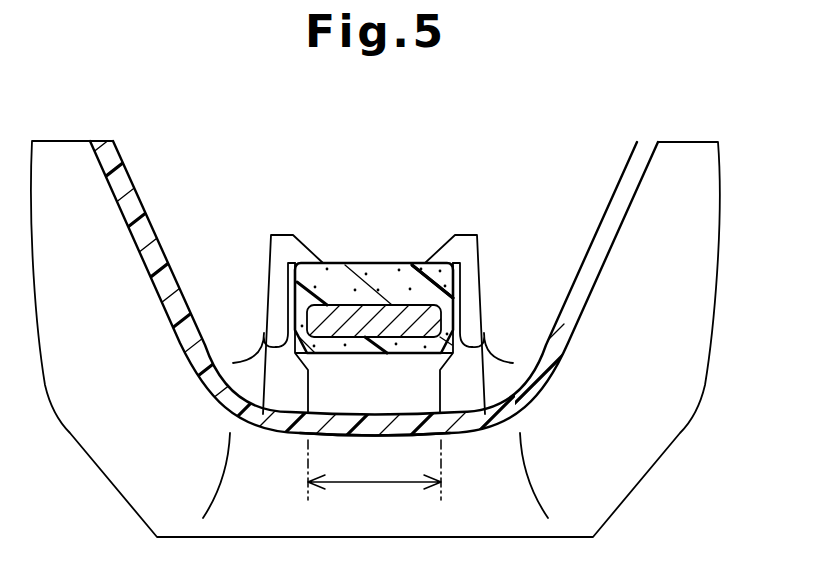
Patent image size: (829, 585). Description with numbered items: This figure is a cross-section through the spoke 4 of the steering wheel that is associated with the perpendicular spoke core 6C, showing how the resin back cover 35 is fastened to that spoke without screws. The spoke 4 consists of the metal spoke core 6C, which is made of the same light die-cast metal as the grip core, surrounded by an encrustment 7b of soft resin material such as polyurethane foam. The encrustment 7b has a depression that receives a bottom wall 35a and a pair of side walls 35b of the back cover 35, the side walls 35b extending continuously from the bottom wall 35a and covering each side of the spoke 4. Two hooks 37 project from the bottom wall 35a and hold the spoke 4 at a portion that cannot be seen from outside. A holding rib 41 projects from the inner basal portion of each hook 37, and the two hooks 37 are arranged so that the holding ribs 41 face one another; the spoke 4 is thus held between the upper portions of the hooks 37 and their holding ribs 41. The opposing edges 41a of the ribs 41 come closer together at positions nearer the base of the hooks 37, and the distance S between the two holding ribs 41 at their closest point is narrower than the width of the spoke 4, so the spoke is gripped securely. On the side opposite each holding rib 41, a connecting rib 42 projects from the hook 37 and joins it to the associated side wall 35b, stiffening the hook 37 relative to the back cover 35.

The back cover 35 is at (736, 183).
The bottom wall 35a is at (273, 433).
The side walls 35b is at (123, 168).
The hooks 37 is at (283, 235).
The holding rib 41 is at (297, 388).
The opposing edges 41a is at (265, 345).
The connecting rib 42 is at (233, 362).
The spoke 4 is at (365, 262).
The encrustment 7b is at (392, 268).
The spoke core 6C is at (378, 355).
The distance between the two holding ribs S is at (376, 482).